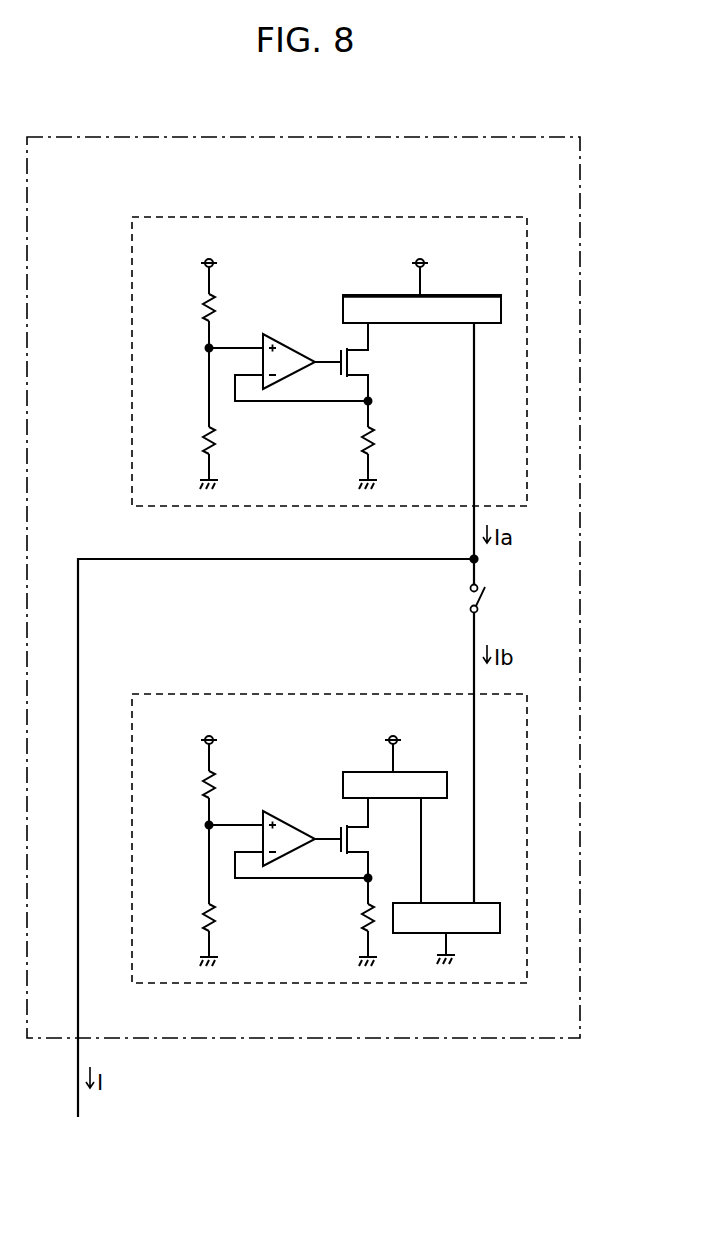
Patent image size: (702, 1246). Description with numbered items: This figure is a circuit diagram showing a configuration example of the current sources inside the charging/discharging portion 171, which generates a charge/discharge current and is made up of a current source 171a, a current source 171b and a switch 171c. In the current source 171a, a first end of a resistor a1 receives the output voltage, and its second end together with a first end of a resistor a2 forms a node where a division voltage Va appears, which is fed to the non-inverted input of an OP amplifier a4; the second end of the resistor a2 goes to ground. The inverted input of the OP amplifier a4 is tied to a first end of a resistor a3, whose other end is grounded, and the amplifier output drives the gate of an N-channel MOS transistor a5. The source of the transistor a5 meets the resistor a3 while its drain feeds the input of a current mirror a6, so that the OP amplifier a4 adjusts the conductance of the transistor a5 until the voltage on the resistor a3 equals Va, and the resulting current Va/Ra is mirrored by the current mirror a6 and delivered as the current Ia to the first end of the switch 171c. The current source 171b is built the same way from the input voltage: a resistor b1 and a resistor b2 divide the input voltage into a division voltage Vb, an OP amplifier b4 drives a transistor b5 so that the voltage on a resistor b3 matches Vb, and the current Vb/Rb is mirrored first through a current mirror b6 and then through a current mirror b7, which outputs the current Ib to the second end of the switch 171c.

The charging/discharging portion 171 is at (304, 137).
The current source 171a is at (329, 217).
The current source 171b is at (329, 694).
The switch 171c is at (516, 599).
The resistor a1 is at (186, 307).
The resistor a2 is at (185, 440).
The resistor a3 is at (344, 440).
The operational amplifier a4 is at (288, 344).
The N-channel type MOS field effect transistor a5 is at (367, 364).
The current mirror a6 is at (471, 296).
The resistor b1 is at (186, 784).
The resistor b2 is at (185, 917).
The resistor b3 is at (344, 917).
The operational amplifier b4 is at (288, 821).
The N-channel type MOS field effect transistor b5 is at (367, 840).
The current mirror b6 is at (432, 773).
The current mirror b7 is at (446, 906).